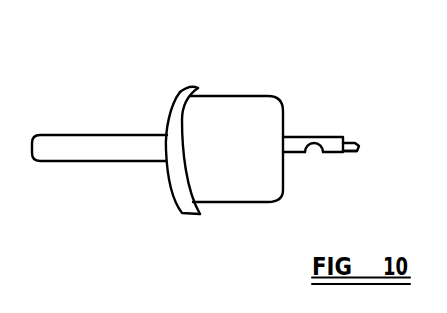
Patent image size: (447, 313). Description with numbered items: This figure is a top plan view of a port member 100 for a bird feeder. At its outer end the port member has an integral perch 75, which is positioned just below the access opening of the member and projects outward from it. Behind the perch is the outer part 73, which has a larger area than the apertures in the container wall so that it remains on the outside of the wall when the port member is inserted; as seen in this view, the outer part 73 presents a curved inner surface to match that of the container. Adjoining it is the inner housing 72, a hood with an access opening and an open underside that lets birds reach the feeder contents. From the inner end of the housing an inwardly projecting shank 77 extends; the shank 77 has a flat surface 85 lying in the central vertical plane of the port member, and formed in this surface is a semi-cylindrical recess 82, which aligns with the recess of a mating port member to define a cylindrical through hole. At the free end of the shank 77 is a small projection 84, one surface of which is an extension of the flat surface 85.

The perch 75 is at (98, 153).
The outer part 73 is at (178, 108).
The connector plug 100 is at (203, 89).
The inner housing 72 is at (238, 107).
The shank 77 is at (297, 141).
The semi-cylindrical recess 82 is at (314, 152).
The projection 84 is at (356, 142).
The flat surface 85 is at (333, 153).